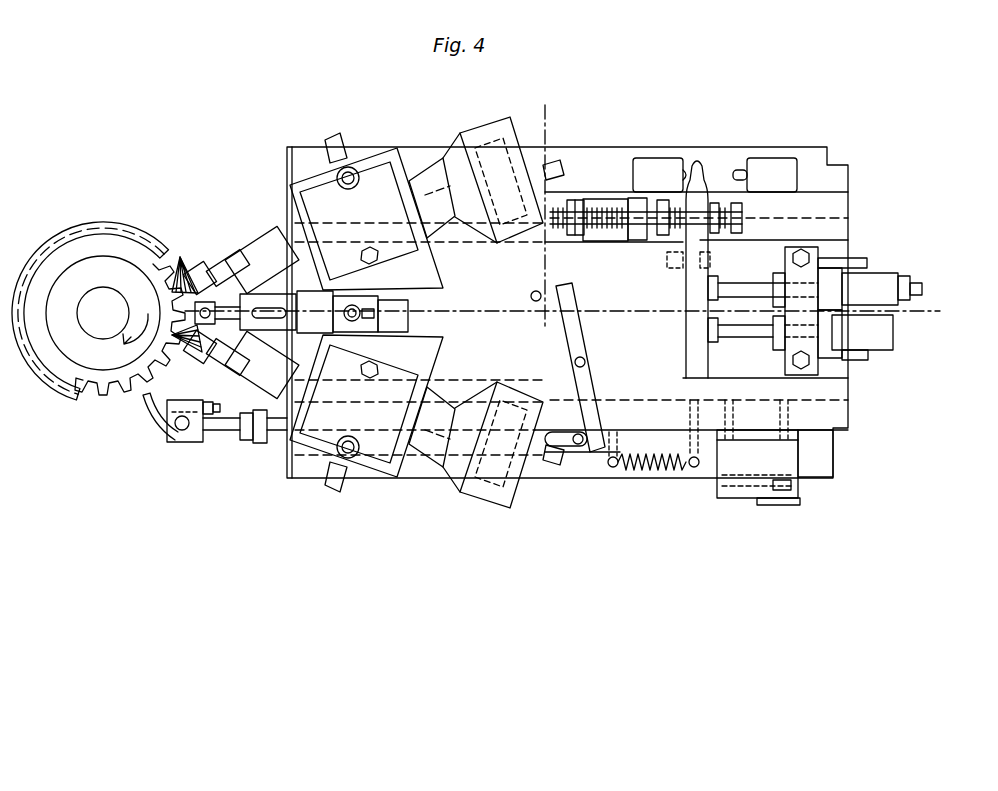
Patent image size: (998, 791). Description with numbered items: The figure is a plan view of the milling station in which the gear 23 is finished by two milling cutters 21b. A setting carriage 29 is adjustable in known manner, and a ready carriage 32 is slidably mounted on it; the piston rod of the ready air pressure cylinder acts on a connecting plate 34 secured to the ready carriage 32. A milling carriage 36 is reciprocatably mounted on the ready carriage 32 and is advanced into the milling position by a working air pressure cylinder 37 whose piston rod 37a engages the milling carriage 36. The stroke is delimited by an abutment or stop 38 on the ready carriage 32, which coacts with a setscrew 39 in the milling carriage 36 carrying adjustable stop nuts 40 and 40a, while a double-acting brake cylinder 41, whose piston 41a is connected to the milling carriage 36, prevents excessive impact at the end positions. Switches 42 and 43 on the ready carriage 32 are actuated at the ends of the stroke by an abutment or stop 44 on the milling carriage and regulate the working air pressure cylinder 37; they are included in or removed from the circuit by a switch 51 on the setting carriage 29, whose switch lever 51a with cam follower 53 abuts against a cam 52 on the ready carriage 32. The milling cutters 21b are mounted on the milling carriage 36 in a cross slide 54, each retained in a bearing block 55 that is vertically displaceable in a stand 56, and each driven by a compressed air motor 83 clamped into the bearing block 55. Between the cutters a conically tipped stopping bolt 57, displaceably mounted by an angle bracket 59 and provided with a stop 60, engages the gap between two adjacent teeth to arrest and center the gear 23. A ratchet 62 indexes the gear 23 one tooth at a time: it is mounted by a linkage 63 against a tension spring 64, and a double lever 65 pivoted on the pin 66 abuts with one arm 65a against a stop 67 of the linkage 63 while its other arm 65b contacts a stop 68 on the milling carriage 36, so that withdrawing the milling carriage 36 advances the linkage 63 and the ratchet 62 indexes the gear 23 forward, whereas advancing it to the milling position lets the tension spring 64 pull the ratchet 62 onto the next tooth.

The milling cutters 21b is at (182, 262).
The gear 23 is at (110, 240).
The setting carriage 29 is at (568, 162).
The ready carriage 32 is at (842, 210).
The connecting plate 34 is at (857, 258).
The milling carriage 36 is at (652, 298).
The working air pressure cylinder 37 is at (886, 275).
The piston rod 37a is at (744, 290).
The abutment or stop 38 is at (636, 240).
The setscrew 39 is at (605, 208).
The stop nut 40 is at (575, 237).
The stop nut 40a is at (662, 237).
The double-acting brake cylinder 41 is at (872, 333).
The piston 41a is at (738, 332).
The switch 42 is at (652, 160).
The switch 43 is at (765, 160).
The abutment or stop 44 is at (698, 162).
The switch 51 is at (766, 502).
The switch lever 51a is at (783, 490).
The cam 52 is at (738, 490).
The cam follower 53 is at (800, 488).
The cross slide 54 is at (452, 228).
The bearing block 55 is at (402, 248).
The stand 56 is at (378, 155).
The stopping bolt 57 is at (196, 296).
The angle bracket 59 is at (262, 240).
The abutment or stop 60 is at (220, 310).
The ratchet 62 is at (148, 400).
The linkage 63 is at (254, 438).
The tension spring 64 is at (650, 472).
The double lever 65 is at (586, 340).
The arm 65a is at (592, 415).
The arm 65b is at (563, 328).
The pin 66 is at (586, 362).
The stop 67 is at (577, 450).
The stop 68 is at (531, 296).
The compressed air motors 83 is at (492, 128).